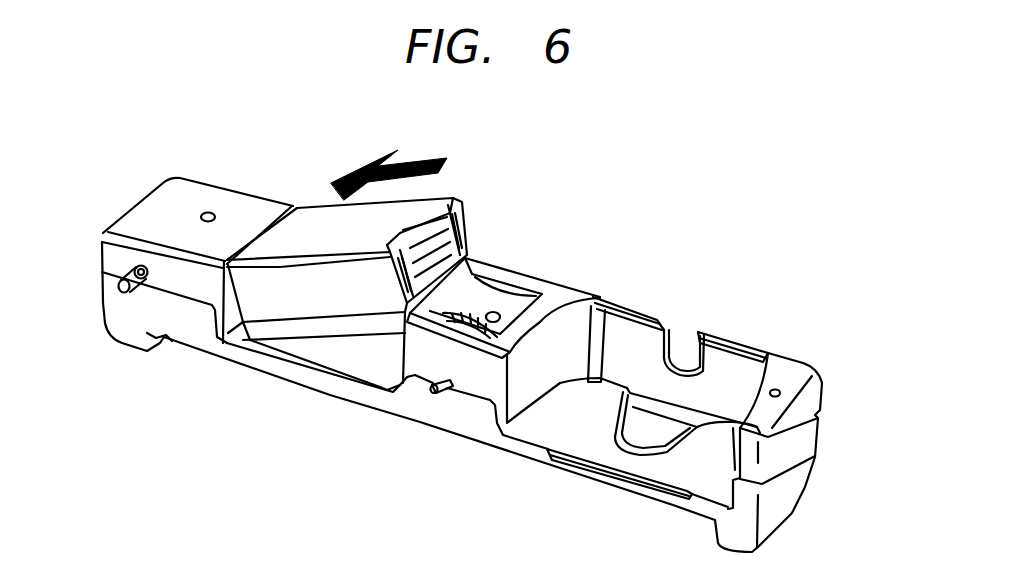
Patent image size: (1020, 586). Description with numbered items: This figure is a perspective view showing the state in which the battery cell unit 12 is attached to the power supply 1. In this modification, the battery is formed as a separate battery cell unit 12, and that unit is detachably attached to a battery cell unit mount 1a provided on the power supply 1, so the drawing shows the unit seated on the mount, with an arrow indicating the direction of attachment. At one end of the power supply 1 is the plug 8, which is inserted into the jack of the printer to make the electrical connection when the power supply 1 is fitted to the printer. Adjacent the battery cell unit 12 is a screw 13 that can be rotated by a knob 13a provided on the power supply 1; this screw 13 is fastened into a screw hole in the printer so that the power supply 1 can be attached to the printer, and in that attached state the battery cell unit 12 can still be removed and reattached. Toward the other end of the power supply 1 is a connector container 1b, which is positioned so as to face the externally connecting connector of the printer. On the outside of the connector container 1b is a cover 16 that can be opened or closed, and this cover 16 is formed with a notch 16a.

The power supply 1 is at (562, 297).
The battery cell unit mount 1a is at (348, 360).
The connector container 1b is at (681, 466).
The plug 8 is at (141, 265).
The battery cell unit 12 is at (438, 200).
The screw 13 is at (433, 397).
The knob 13a is at (458, 315).
The cover 16 is at (718, 373).
The notch 16a is at (668, 335).